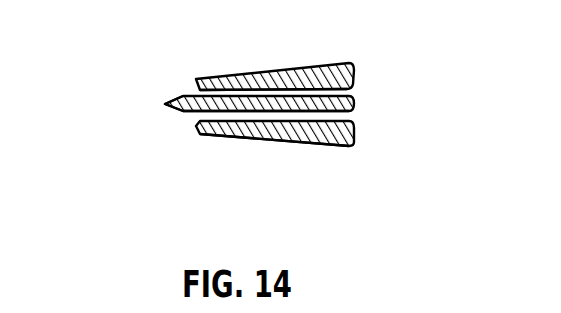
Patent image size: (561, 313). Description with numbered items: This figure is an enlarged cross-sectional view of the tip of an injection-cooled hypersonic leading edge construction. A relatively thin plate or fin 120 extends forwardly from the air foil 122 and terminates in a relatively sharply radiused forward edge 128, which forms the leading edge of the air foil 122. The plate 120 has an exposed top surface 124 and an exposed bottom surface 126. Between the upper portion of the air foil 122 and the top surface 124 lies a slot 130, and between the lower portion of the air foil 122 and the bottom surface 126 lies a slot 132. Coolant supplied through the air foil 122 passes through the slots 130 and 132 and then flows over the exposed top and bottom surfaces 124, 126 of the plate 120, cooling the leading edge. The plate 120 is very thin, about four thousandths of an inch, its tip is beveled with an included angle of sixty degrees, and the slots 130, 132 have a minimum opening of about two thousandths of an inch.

The plate 120 is at (178, 96).
The air foil 122 is at (278, 145).
The top surface 124 is at (200, 90).
The bottom surface 126 is at (178, 113).
The forward edge 128 is at (168, 103).
The slot 130 is at (353, 88).
The slot 132 is at (353, 118).